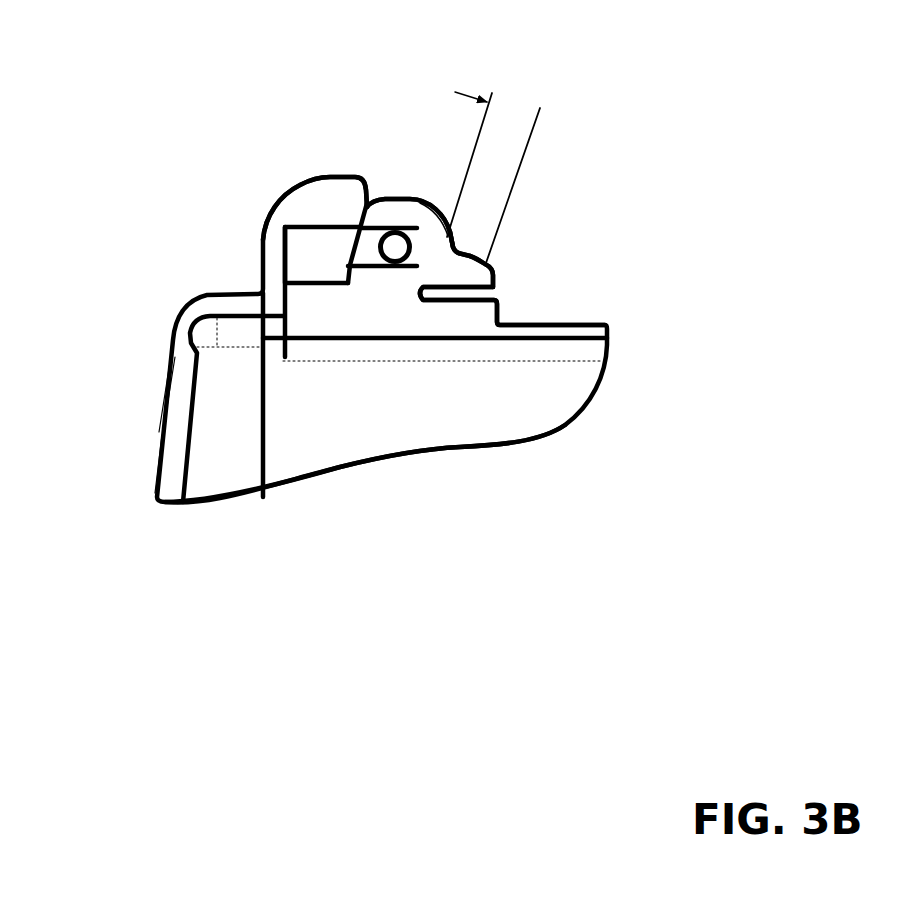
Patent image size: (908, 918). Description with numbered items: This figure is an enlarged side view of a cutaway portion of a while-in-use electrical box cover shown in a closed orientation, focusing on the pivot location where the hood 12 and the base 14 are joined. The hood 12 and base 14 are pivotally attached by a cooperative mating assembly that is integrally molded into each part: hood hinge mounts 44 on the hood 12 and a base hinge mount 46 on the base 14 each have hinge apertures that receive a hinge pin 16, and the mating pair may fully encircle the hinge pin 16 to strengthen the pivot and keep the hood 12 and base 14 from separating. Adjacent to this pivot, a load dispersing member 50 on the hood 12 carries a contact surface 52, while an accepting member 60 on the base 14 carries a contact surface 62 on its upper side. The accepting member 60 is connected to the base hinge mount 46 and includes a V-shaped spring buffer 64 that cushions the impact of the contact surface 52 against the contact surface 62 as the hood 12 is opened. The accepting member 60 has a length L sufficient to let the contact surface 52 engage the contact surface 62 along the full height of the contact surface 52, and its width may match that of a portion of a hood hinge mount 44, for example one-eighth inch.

The hood 12 is at (199, 289).
The base 14 is at (392, 458).
The hinge pin 16 is at (396, 258).
The hood hinge mounts 44 is at (310, 247).
The base hinge mount 46 is at (372, 275).
The load dispersing member 50 is at (343, 187).
The contact surface 52 is at (376, 187).
The accepting member 60 is at (493, 266).
The contact surface 62 is at (463, 244).
The V-shaped spring buffer 64 is at (507, 289).
The length L is at (538, 124).